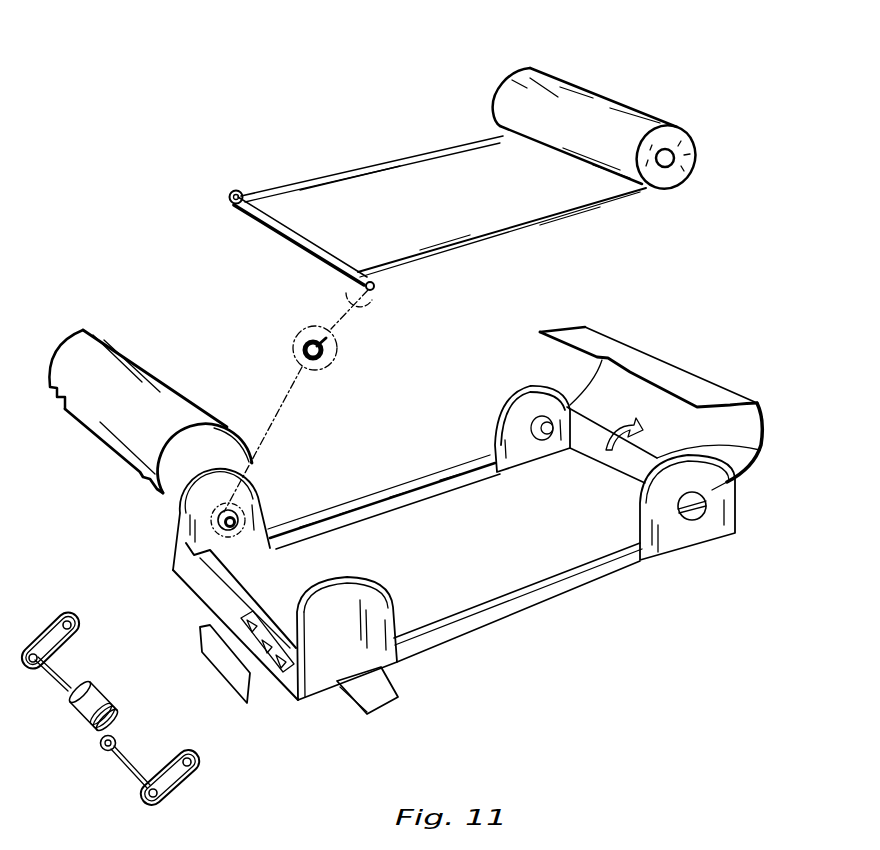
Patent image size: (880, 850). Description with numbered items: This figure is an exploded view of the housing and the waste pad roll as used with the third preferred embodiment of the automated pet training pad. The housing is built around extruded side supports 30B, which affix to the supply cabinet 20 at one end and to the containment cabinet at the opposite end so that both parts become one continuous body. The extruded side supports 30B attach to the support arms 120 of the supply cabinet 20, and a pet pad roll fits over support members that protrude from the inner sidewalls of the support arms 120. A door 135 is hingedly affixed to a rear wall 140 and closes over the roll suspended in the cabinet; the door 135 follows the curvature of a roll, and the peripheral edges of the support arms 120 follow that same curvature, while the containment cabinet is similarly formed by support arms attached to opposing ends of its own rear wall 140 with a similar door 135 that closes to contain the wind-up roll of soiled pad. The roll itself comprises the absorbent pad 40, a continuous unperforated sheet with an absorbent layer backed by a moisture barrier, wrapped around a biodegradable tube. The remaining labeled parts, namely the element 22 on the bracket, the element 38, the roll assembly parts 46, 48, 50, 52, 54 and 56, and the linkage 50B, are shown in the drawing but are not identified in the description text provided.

The supply cabinet 20 is at (540, 405).
The pivot hole 22 is at (533, 427).
The extruded side supports 30B is at (530, 597).
The side wall of base 38 is at (200, 583).
The absorbent pad 40 is at (392, 687).
The roll assembly 46 is at (410, 138).
The core hole 48 is at (690, 158).
The sheet material 50 is at (458, 177).
The tensioning link assembly 50B is at (78, 717).
The roll 52 is at (607, 107).
The end bar 54 is at (277, 227).
The end ring 56 is at (235, 192).
The support arms 120 is at (733, 533).
The door 135 is at (750, 423).
The rear wall 140 is at (750, 448).